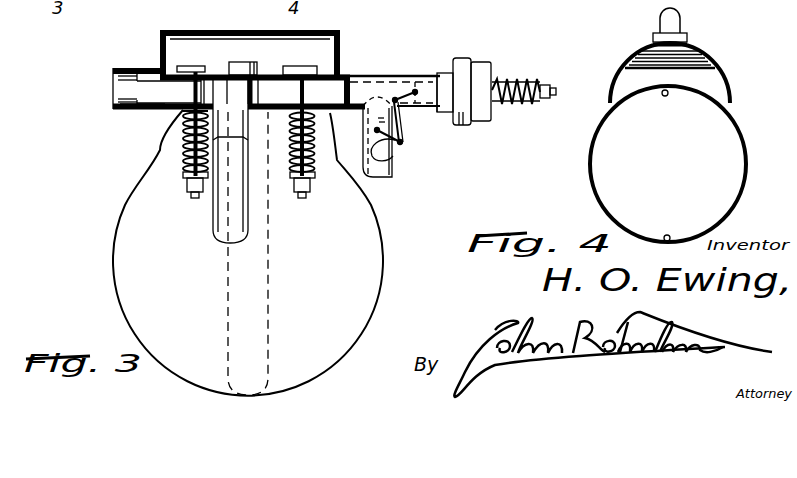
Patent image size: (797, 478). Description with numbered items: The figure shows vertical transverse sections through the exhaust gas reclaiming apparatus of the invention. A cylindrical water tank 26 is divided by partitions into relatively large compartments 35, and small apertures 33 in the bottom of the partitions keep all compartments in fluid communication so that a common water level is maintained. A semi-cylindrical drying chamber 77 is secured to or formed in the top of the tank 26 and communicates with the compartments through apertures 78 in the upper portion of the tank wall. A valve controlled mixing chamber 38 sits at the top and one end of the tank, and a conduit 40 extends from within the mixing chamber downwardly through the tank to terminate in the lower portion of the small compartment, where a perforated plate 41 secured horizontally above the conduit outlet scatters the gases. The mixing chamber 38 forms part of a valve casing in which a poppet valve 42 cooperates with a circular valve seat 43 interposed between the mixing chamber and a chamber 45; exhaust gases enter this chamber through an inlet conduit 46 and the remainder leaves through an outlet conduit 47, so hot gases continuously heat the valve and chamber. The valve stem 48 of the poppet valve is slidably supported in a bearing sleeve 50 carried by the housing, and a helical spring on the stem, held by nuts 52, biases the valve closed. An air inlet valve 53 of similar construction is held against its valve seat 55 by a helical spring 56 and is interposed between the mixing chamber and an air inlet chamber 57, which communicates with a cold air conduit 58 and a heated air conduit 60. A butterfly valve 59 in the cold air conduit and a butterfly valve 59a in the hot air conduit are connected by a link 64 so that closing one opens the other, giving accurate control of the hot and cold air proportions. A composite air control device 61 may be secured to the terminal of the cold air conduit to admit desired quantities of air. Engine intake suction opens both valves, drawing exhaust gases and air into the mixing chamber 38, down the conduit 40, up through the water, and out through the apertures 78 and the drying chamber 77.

In FIG. 4, the water tank 26 is at (747, 170).
In FIG. 4, the apertures 33 is at (669, 235).
In FIG. 4, the large compartments 35 is at (667, 51).
In FIG. 3, the mixing chamber 38 is at (232, 40).
In FIG. 3, the conduit 40 is at (270, 276).
In FIG. 3, the perforated plate 41 is at (129, 9).
In FIG. 3, the poppet valve 42 is at (196, 66).
In FIG. 3, the valve seat 43 is at (164, 68).
In FIG. 3, the port or chamber 45 is at (175, 85).
In FIG. 3, the inlet conduit 46 is at (213, 225).
In FIG. 3, the outlet conduit 47 is at (137, 108).
In FIG. 3, the valve stem 48 is at (195, 91).
In FIG. 3, the bearing sleeve 50 is at (183, 114).
In FIG. 3, the nuts 52 is at (185, 182).
In FIG. 3, the air inlet valve 53 is at (315, 70).
In FIG. 3, the valve seat 55 is at (347, 76).
In FIG. 3, the helical spring 56 is at (372, 180).
In FIG. 3, the air inlet chamber 57 is at (183, 152).
In FIG. 3, the cold air conduit 58 is at (436, 74).
In FIG. 3, the butterfly valve 59 is at (414, 89).
In FIG. 3, the butterfly valve 59a is at (390, 168).
In FIG. 3, the heated air conduit 60 is at (395, 153).
In FIG. 3, the composite air control device 61 is at (486, 68).
In FIG. 3, the link 64 is at (404, 125).
In FIG. 4, the drying chamber 77 is at (705, 69).
In FIG. 4, the apertures 78 is at (667, 96).